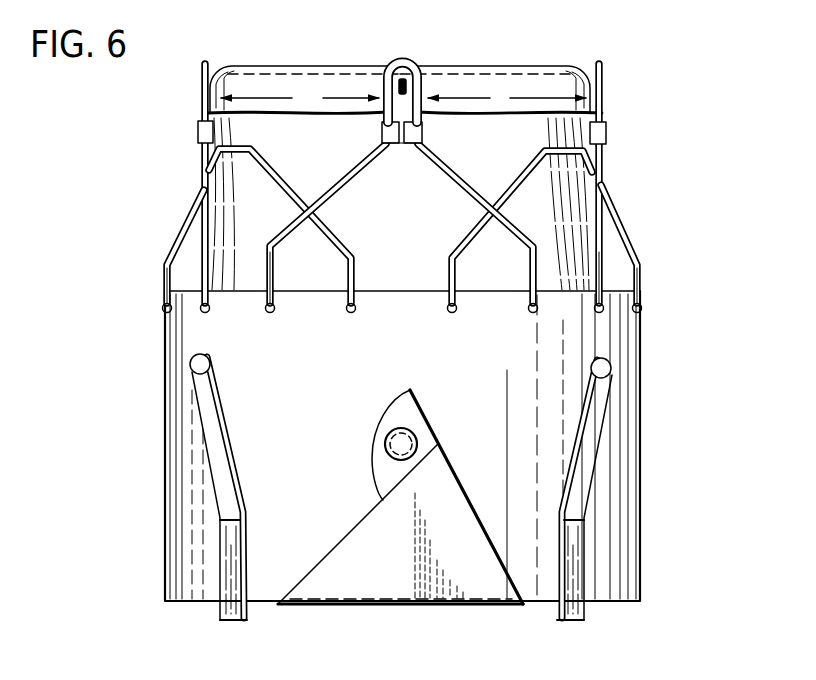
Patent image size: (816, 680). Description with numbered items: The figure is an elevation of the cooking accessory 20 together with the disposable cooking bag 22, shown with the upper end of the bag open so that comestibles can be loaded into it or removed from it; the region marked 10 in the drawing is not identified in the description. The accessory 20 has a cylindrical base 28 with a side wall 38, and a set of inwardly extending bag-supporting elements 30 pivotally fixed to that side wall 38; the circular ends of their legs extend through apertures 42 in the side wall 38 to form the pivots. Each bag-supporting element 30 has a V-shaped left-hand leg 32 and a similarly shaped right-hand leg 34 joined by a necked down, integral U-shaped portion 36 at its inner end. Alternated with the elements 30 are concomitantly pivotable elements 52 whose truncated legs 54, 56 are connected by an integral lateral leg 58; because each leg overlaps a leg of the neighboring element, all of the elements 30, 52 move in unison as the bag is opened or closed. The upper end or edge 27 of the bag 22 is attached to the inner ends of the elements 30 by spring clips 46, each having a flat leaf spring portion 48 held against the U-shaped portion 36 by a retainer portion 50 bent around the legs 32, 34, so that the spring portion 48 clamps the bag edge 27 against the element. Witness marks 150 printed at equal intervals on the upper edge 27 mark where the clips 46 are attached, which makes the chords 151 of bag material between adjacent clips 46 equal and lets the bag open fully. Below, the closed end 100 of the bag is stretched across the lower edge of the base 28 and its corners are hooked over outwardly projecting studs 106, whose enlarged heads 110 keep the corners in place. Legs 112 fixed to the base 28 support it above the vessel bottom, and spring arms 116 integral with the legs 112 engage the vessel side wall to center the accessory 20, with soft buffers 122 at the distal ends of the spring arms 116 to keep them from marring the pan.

The lobe of plate 10 is at (384, 413).
The accessory 20 is at (148, 322).
The disposable cooking bag 22 is at (263, 104).
The upper end or edge of the bag 27 is at (533, 95).
The cylindrical base 28 is at (643, 342).
The bag-supporting elements 30 is at (200, 187).
The left-hand leg 32 is at (279, 230).
The right-hand leg 34 is at (202, 156).
The U-shaped portion 36 is at (385, 82).
The side wall of base 38 is at (477, 376).
The apertures 42 is at (272, 312).
The spring clips 46 is at (196, 130).
The leaf spring portion 48 is at (424, 83).
The retainer portion 50 is at (377, 156).
The pivotable elements 52 is at (176, 221).
The truncated leg 54 is at (165, 262).
The truncated leg 56 is at (342, 238).
The lateral leg 58 is at (240, 146).
The closed end of the bag 100 is at (362, 608).
The studs 106 is at (378, 442).
The enlarged heads 110 is at (418, 446).
The legs 112 is at (248, 542).
The spring arms 116 is at (228, 422).
The buffers 122 is at (190, 363).
The witness marks 150 is at (404, 86).
The chords 151 is at (300, 97).